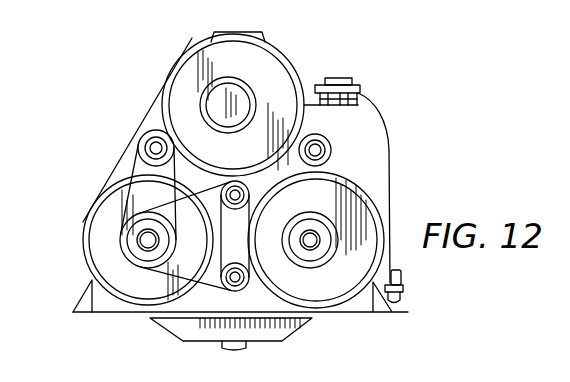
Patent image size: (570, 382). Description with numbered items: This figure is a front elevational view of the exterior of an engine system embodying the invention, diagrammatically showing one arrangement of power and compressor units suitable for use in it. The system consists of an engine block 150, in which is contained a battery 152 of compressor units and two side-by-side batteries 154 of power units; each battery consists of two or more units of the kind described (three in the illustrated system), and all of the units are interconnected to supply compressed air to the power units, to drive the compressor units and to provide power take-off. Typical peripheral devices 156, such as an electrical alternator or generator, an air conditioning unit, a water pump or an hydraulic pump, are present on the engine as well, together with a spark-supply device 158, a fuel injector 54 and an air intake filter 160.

The engine block 150 is at (389, 182).
The battery of compressor units 152 is at (268, 70).
The batteries of power units 154 is at (133, 287).
The peripheral devices 156 is at (147, 150).
The spark-supply device 158 is at (335, 78).
The air intake filter 160 is at (212, 100).
The fuel injector 54 is at (362, 99).